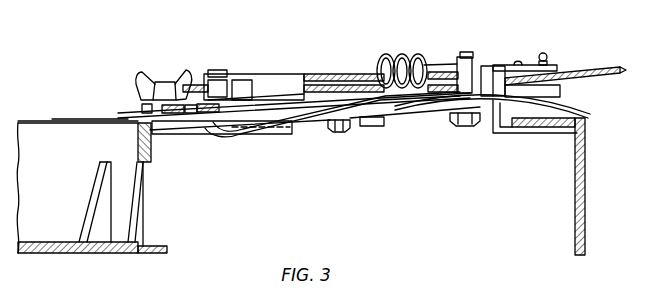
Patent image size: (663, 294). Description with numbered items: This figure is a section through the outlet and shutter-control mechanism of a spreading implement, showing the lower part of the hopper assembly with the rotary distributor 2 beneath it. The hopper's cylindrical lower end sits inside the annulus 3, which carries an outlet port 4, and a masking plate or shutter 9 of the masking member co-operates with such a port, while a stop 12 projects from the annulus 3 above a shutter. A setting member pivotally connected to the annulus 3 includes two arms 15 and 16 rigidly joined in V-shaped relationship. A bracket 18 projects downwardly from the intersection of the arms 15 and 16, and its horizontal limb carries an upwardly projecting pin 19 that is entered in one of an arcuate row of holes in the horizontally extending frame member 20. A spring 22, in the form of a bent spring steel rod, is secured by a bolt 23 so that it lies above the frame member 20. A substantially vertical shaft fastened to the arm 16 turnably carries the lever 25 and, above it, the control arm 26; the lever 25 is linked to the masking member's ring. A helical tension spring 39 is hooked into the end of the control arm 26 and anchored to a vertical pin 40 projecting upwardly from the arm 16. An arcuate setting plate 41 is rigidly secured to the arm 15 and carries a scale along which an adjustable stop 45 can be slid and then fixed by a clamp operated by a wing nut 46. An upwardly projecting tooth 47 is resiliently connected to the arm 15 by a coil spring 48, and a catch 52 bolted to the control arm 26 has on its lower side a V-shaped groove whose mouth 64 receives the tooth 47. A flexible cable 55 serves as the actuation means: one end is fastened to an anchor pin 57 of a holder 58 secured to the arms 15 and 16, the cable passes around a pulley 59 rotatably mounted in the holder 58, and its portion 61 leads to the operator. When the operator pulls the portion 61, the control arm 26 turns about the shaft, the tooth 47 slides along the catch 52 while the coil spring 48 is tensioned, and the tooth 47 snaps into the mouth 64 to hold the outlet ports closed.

The rotary distributor 2 is at (34, 250).
The annulus 3 is at (46, 122).
The outlet port 4 is at (100, 243).
The masking plate or shutter 9 is at (140, 225).
The stop 12 is at (71, 120).
The arm 15 is at (208, 125).
The arm 16 is at (383, 121).
The bracket 18 is at (497, 134).
The pin 19 is at (540, 119).
The frame member 20 is at (586, 126).
The spring 22 is at (580, 112).
The bolt 23 is at (463, 128).
The lever 25 is at (185, 114).
The control arm 26 is at (196, 80).
The helical tension spring 39 is at (383, 57).
The vertical pin 40 is at (466, 58).
The setting plate 41 is at (366, 127).
The stop 45 is at (141, 108).
The wing nut 46 is at (150, 72).
The tooth 47 is at (430, 66).
The coil spring 48 is at (234, 146).
The catch 52 is at (296, 69).
The flexible cable 55 is at (333, 72).
The anchor pin 57 is at (543, 52).
The holder 58 is at (500, 68).
The pulley 59 is at (573, 73).
The cable portion 61 is at (618, 71).
The mouth 64 is at (245, 80).